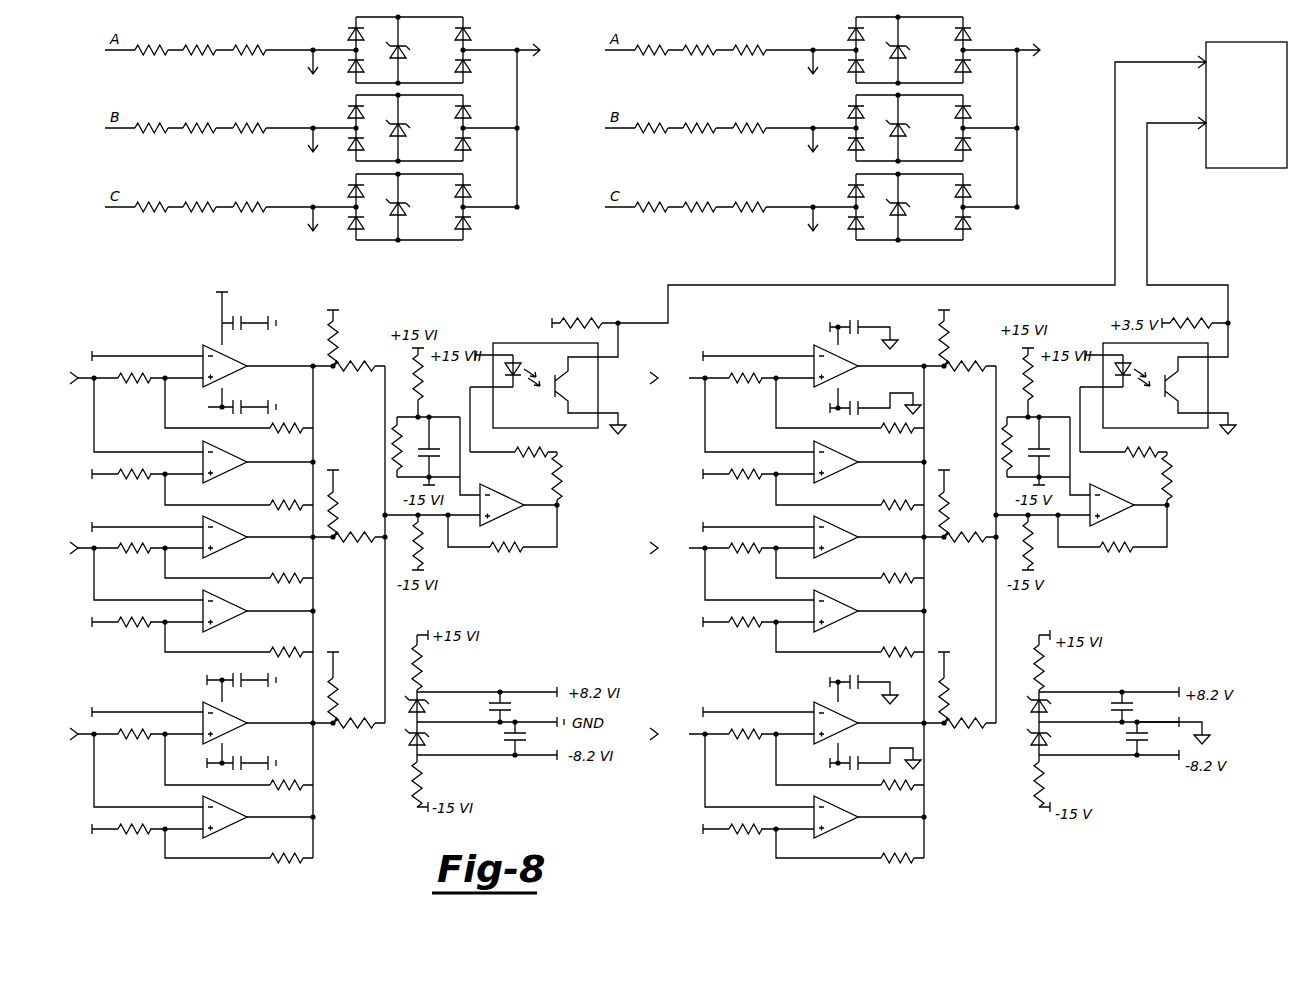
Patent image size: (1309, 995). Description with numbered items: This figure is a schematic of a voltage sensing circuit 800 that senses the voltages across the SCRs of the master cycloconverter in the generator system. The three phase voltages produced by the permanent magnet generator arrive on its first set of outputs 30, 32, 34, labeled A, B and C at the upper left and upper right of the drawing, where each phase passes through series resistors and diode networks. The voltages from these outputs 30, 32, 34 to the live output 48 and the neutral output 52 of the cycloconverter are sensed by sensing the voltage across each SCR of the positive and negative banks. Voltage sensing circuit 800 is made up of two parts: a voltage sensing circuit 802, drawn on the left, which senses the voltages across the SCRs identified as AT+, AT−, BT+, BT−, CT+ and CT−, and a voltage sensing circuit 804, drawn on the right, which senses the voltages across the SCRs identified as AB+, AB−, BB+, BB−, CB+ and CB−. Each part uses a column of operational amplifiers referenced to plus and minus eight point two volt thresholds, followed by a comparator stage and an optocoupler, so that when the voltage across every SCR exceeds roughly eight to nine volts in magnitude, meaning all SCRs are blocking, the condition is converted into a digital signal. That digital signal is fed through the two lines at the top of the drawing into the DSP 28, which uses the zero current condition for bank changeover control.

The DSP 28 is at (1246, 42).
The first output of permanent magnet generator 30 is at (550, 49).
The first output of permanent magnet generator 32 is at (550, 127).
The first output of permanent magnet generator 34 is at (550, 206).
The live output of cycloconverter 48 is at (535, 722).
The neutral output of cycloconverter 52 is at (1247, 740).
The voltage sensing circuit 800 is at (1068, 64).
The voltage sensing circuit 802 is at (156, 846).
The voltage sensing circuit 804 is at (733, 842).